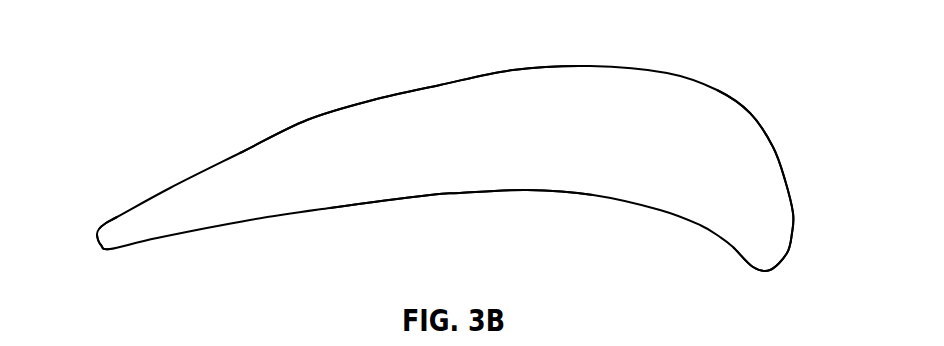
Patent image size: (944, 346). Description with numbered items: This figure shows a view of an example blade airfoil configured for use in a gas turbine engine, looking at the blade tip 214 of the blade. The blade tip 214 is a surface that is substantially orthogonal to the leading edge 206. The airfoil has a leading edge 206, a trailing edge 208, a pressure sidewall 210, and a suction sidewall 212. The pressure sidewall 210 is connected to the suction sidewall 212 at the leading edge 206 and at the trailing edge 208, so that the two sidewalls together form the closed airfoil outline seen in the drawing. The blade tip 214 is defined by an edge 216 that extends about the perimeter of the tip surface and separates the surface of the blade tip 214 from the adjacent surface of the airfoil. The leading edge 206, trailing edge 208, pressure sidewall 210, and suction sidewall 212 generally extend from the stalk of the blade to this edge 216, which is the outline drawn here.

The leading edge 206 is at (783, 94).
The trailing edge 208 is at (87, 211).
The pressure sidewall 210 is at (473, 221).
The suction sidewall 212 is at (342, 78).
The blade tip 214 is at (522, 150).
The edge 216 is at (513, 70).